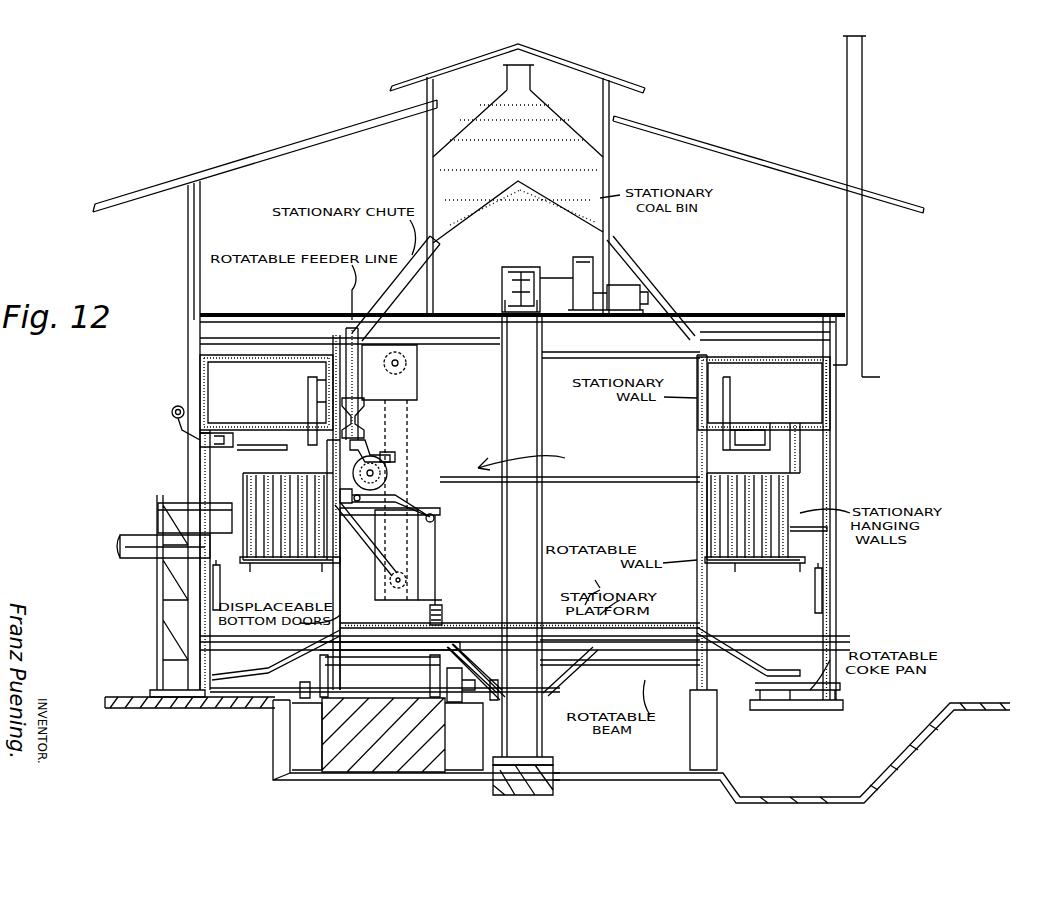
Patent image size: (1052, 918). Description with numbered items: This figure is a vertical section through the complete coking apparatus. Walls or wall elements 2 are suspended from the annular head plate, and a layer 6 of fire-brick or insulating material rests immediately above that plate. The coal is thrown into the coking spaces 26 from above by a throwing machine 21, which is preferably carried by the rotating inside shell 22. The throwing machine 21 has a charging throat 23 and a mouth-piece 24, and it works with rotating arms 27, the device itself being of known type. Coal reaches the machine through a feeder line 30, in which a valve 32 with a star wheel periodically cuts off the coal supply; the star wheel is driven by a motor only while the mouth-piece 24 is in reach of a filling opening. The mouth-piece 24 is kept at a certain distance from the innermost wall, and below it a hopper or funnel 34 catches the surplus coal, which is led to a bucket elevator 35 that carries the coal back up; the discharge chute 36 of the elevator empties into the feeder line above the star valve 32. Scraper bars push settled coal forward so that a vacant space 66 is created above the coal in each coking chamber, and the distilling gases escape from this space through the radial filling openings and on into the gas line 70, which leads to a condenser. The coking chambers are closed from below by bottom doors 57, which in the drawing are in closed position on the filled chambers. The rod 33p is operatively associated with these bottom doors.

The wall elements 2 is at (698, 530).
The layer of fire-brick or insulating material 6 is at (300, 478).
The throwing machine 21 is at (388, 475).
The rotating inside shell 22 is at (340, 602).
The charging throat 23 is at (387, 505).
The mouth-piece 24 is at (330, 478).
The coking spaces 26 is at (250, 565).
The rotating arms 27 is at (410, 449).
The feeder line 30 is at (346, 352).
The valve 32 is at (372, 428).
The door operating rod 33p is at (212, 598).
The hopper or funnel 34 is at (362, 548).
The bucket elevator 35 is at (418, 545).
The discharge chute 36 is at (368, 393).
The bottom doors 57 is at (290, 563).
The vacant space 66 is at (250, 480).
The gas line 70 is at (135, 540).